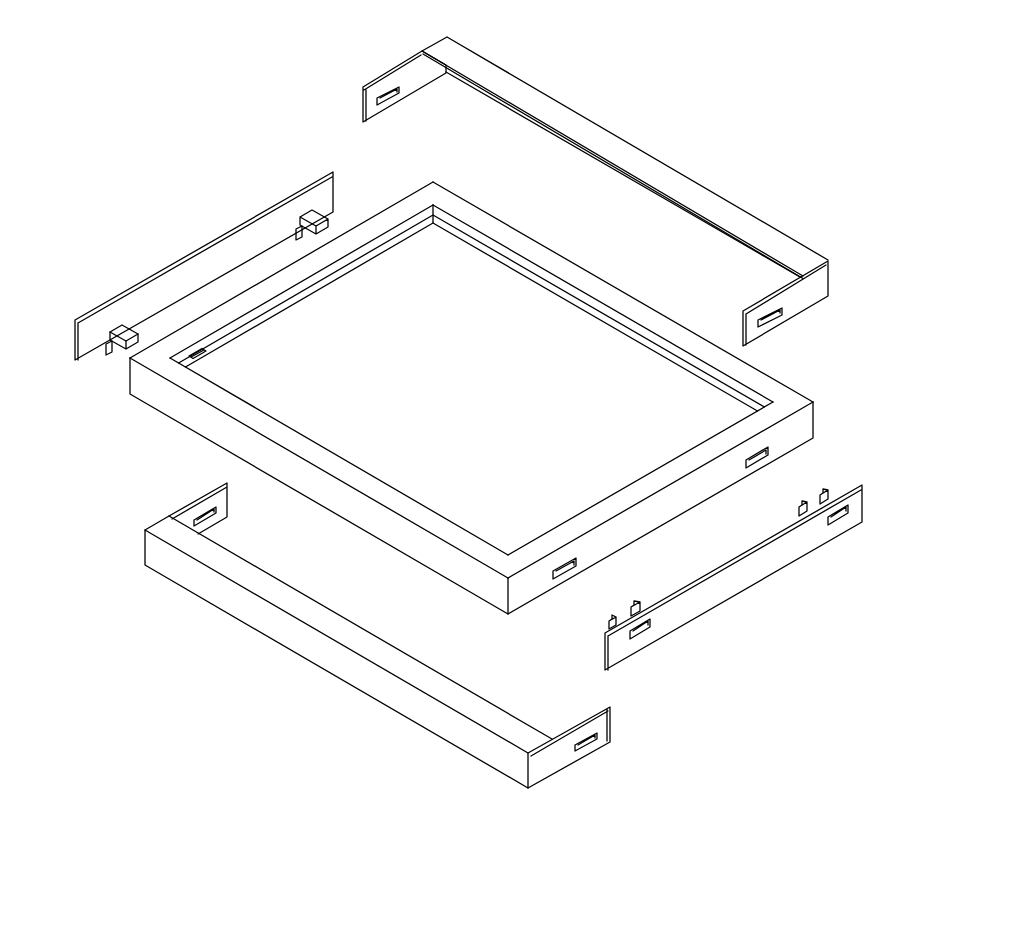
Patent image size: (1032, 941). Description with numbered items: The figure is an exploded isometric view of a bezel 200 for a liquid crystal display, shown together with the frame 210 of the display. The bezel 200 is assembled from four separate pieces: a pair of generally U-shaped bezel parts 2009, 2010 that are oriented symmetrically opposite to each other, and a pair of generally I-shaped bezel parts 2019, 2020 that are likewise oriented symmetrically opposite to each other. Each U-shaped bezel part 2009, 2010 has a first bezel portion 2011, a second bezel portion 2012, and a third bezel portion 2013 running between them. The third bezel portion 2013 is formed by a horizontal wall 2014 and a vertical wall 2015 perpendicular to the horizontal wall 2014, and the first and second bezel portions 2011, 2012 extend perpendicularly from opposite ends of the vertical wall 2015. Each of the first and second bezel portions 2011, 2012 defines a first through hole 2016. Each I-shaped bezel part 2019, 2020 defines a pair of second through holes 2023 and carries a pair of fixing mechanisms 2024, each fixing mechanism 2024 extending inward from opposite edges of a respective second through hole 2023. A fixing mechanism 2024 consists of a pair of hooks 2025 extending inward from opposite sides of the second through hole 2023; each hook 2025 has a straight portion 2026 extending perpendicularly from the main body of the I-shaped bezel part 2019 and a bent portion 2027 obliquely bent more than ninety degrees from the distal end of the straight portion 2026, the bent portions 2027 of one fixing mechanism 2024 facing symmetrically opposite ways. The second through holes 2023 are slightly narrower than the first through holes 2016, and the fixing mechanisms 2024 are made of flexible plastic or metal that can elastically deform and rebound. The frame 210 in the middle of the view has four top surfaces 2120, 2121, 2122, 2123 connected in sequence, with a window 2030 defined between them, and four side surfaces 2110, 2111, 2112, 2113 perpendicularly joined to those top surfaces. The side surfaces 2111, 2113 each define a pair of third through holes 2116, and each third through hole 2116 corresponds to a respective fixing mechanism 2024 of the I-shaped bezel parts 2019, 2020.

The bezel 200 is at (806, 220).
The frame 210 is at (355, 204).
The side surface 2110 is at (413, 548).
The side surface 2111 is at (805, 424).
The side surface 2112 is at (463, 238).
The side surface 2113 is at (413, 228).
The third through hole 2116 is at (198, 357).
The top surface 2120 is at (317, 455).
The top surface 2121 is at (613, 510).
The top surface 2122 is at (588, 282).
The top surface 2123 is at (283, 278).
The window 2030 is at (483, 285).
The U-shaped bezel part 2010 is at (596, 102).
The horizontal wall 2014 is at (458, 58).
The vertical wall 2015 is at (483, 90).
The second bezel portion 2012 is at (408, 75).
The first bezel portion 2011 is at (802, 295).
The first through hole 2016 is at (777, 322).
The U-shaped bezel part 2009 is at (277, 666).
The third bezel portion 2013 is at (368, 682).
The I-shaped bezel part 2020 is at (751, 609).
The second through hole 2023 is at (829, 524).
The I-shaped bezel part 2019 is at (213, 210).
The hook 2025 is at (148, 212).
The straight portion 2026 is at (127, 320).
The bent portion 2027 is at (137, 327).
The fixing mechanism 2024 is at (120, 359).